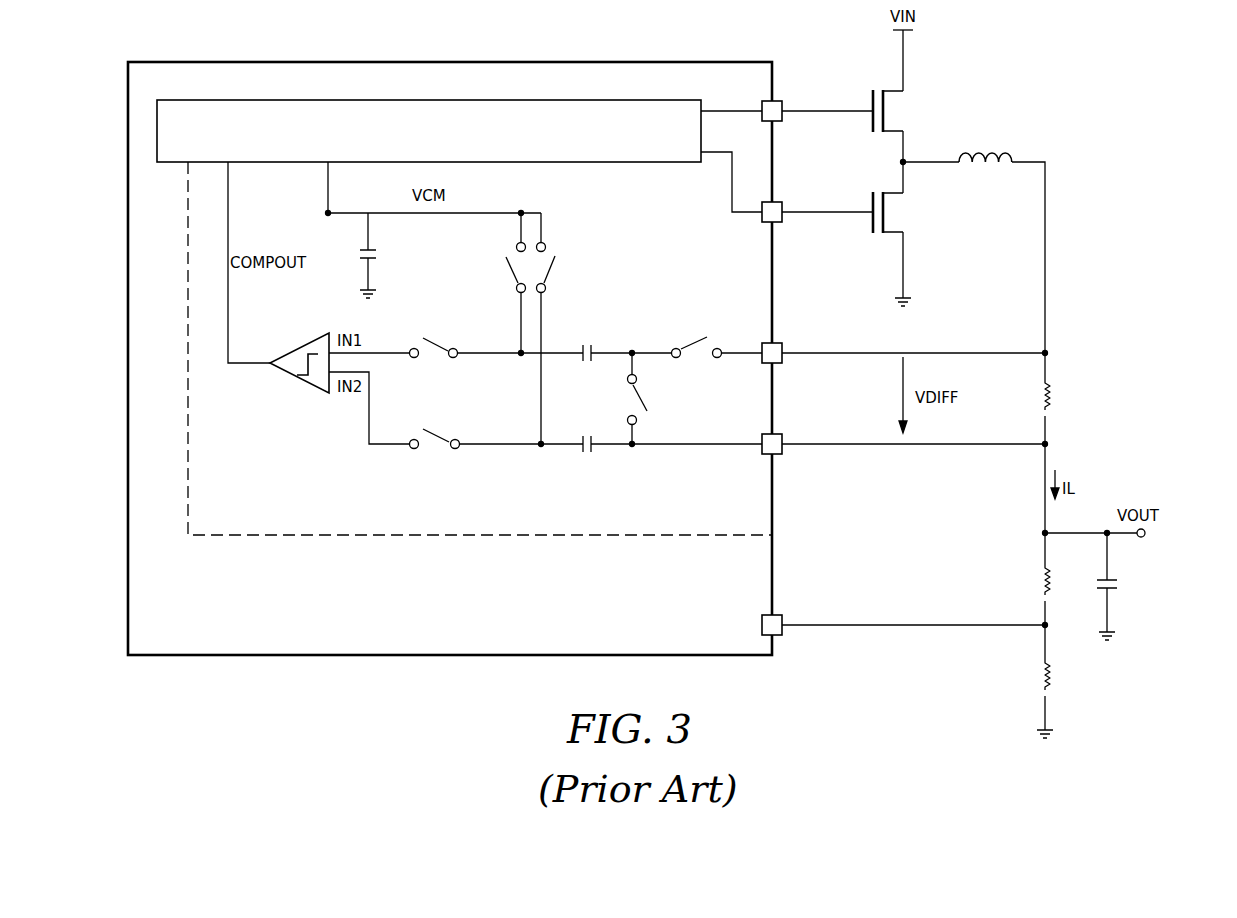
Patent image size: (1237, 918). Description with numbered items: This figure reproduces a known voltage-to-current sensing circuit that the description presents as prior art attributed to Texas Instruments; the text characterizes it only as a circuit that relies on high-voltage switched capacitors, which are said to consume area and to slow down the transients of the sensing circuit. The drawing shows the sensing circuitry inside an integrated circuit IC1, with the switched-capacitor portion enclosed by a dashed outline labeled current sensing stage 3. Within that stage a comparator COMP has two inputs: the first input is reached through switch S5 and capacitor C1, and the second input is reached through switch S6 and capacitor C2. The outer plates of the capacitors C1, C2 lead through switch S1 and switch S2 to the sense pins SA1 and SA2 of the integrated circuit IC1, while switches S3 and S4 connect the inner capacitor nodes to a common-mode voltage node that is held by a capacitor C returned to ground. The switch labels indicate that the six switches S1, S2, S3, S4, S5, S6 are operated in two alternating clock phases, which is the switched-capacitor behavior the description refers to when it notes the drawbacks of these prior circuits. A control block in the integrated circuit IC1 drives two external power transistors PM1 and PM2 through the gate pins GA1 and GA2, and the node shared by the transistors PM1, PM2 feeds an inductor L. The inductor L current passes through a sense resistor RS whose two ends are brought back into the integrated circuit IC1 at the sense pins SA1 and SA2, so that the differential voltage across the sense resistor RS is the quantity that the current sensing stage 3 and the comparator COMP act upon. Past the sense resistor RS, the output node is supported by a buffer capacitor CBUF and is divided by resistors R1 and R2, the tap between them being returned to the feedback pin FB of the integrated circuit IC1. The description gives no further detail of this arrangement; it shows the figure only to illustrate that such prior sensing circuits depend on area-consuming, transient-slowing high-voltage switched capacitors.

The integrated circuit IC1 is at (450, 358).
The current sensing stage 3 is at (480, 348).
The comparator COMP is at (299, 371).
The capacitor C is at (379, 255).
The switch S1 is at (697, 324).
The switch S2 is at (657, 399).
The switch S3 is at (494, 267).
The switch S4 is at (566, 267).
The switch S5 is at (434, 324).
The switch S6 is at (435, 416).
The capacitor C1 is at (587, 341).
The capacitor C2 is at (587, 433).
The gate pin GA1 is at (793, 104).
The gate pin GA2 is at (793, 205).
The sense pin SA1 is at (792, 347).
The sense pin SA2 is at (792, 438).
The feedback pin FB is at (787, 617).
The power transistor PM1 is at (904, 111).
The power transistor PM2 is at (904, 212).
The inductor L is at (985, 143).
The sense resistor RS is at (1059, 395).
The feedback resistor R1 is at (1059, 580).
The feedback resistor R2 is at (1059, 675).
The buffer capacitor CBUF is at (1130, 585).